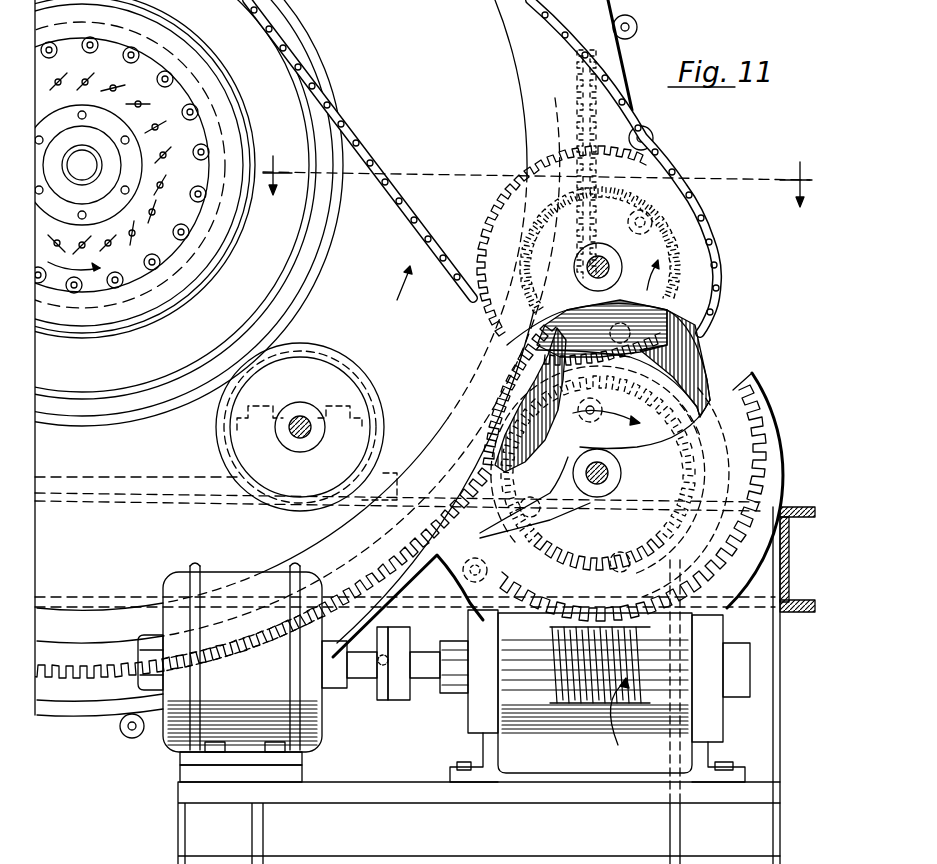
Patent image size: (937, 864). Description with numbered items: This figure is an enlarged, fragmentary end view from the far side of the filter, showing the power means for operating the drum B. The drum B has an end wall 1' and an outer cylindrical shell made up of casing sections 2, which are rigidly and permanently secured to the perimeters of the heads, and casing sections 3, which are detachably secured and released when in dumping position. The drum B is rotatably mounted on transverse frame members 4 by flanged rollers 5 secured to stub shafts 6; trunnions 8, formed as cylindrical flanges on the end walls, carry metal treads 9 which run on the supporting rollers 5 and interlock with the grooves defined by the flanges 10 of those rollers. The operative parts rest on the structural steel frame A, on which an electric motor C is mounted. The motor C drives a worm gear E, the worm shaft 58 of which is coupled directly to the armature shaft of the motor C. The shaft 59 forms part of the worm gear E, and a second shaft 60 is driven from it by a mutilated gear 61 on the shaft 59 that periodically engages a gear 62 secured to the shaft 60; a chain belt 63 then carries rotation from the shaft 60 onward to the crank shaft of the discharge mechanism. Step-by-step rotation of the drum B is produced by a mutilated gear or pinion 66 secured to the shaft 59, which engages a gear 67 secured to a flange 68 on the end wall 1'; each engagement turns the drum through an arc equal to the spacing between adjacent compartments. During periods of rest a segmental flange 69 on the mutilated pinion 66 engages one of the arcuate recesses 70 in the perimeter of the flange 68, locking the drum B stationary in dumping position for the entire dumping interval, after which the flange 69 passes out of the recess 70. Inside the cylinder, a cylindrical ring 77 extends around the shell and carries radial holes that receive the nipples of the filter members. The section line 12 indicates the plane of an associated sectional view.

The end wall 1' is at (405, 321).
The casing section 2 is at (82, 165).
The casing section 3 is at (123, 242).
The transverse frame member 4 is at (82, 166).
The flanged roller 5 is at (362, 432).
The stub shaft 6 is at (305, 441).
The trunnion 8 is at (312, 290).
The metal tread 9 is at (334, 248).
The flange 10 is at (370, 385).
The section line 12 is at (537, 175).
The worm shaft 58 is at (436, 680).
The shaft 59 is at (615, 473).
The shaft 60 is at (612, 262).
The mutilated gear 61 is at (665, 378).
The gear 62 is at (648, 326).
The chain belt 63 is at (720, 272).
The mutilated pinion 66 is at (533, 441).
The gear 67 is at (62, 682).
The flange 68 is at (85, 618).
The segmental flange 69 is at (650, 173).
The arcuate recess 70 is at (100, 660).
The cylindrical ring 77 is at (110, 255).
The frame A is at (479, 823).
The drum B is at (511, 83).
The electric motor C is at (322, 740).
The worm gear E is at (772, 420).